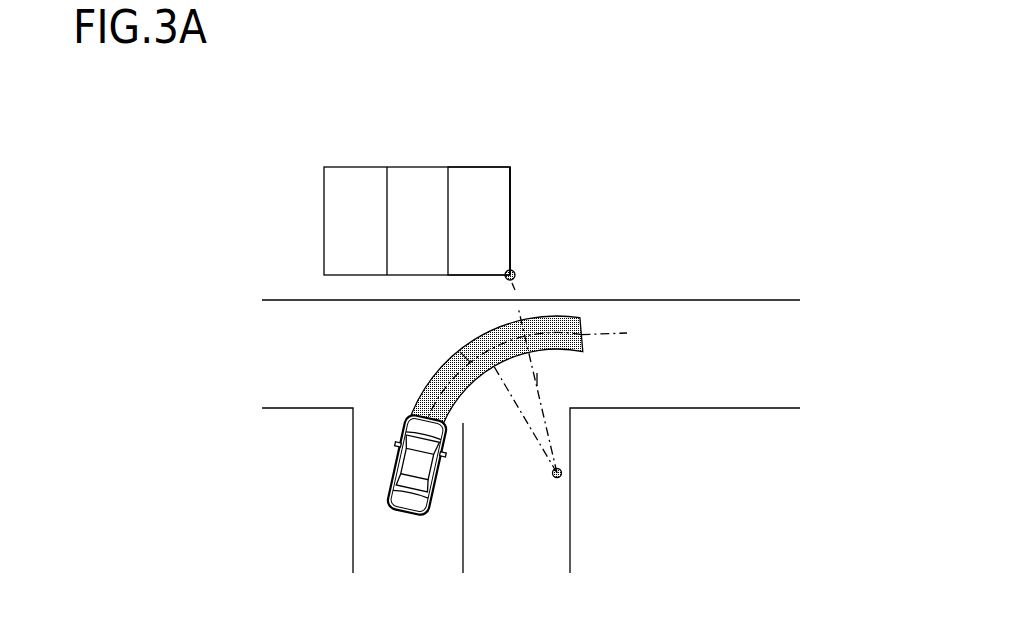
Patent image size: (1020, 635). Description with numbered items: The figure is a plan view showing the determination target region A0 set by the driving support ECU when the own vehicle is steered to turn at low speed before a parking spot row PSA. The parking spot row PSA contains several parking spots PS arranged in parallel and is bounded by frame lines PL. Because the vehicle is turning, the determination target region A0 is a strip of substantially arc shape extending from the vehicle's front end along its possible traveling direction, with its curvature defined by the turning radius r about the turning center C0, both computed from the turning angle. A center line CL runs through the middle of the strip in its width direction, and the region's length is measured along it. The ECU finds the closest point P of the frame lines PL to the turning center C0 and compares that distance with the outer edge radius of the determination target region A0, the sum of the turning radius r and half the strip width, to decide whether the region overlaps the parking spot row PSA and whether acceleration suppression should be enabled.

The parking spot row PSA is at (503, 153).
The parking spot PS is at (493, 195).
The frame lines PL is at (510, 235).
The closest point P is at (514, 272).
The center line CL is at (604, 332).
The determination target region A0 is at (433, 376).
The turning radius r is at (518, 403).
The turning center C0 is at (562, 473).